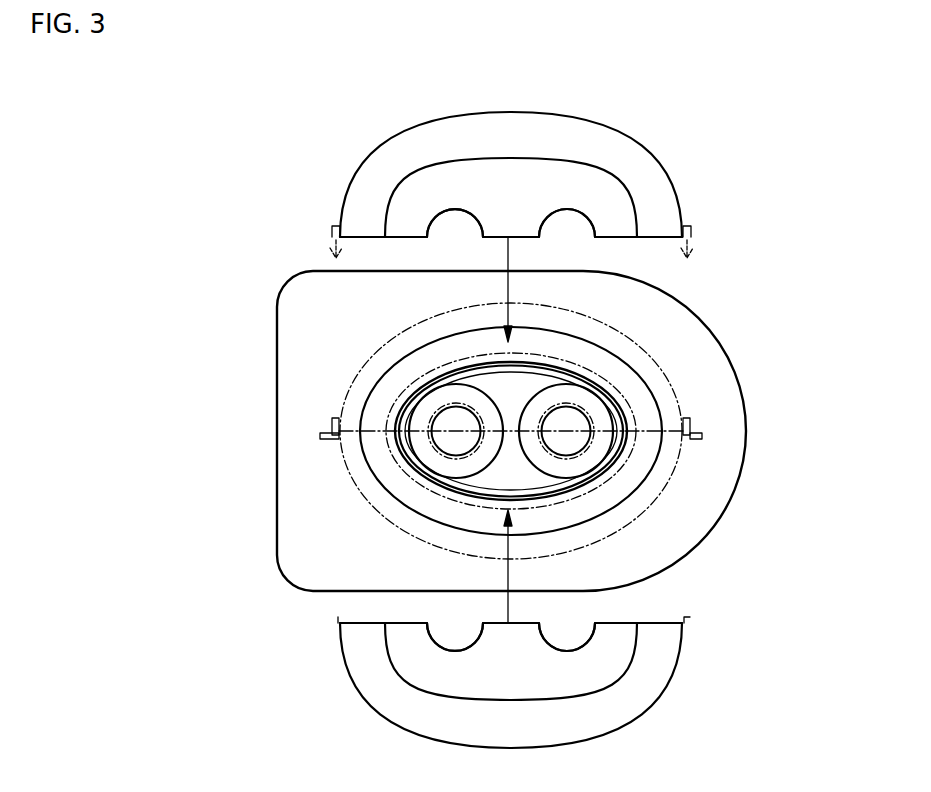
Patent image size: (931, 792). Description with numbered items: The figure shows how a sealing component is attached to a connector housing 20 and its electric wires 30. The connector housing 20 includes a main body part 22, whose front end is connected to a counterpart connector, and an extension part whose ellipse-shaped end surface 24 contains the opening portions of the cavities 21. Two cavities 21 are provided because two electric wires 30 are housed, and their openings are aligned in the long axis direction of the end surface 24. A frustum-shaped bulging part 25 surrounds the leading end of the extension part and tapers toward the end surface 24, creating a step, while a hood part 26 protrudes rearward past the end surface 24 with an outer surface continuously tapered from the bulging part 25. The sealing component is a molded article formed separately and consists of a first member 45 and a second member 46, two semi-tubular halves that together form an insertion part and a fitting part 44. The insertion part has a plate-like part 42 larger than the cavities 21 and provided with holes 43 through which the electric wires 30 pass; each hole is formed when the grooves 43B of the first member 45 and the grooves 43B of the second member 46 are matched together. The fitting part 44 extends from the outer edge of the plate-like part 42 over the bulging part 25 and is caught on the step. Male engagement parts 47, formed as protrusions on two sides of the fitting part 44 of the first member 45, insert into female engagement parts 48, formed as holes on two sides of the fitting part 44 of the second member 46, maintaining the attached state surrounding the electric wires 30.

The connector housing 20 is at (495, 426).
The cavities 21 is at (450, 437).
The main body part 22 is at (290, 373).
The end surface 24 is at (518, 480).
The bulging part 25 is at (380, 358).
The hood part 26 is at (452, 370).
The electric wires 30 is at (435, 470).
The plate-like part 42 is at (513, 172).
The holes 43 is at (578, 403).
The grooves 43B is at (440, 217).
The fitting part 44 is at (557, 128).
The first member 45 is at (676, 176).
The second member 46 is at (672, 681).
The male engagement parts 47 is at (330, 227).
The female engagement parts 48 is at (320, 438).